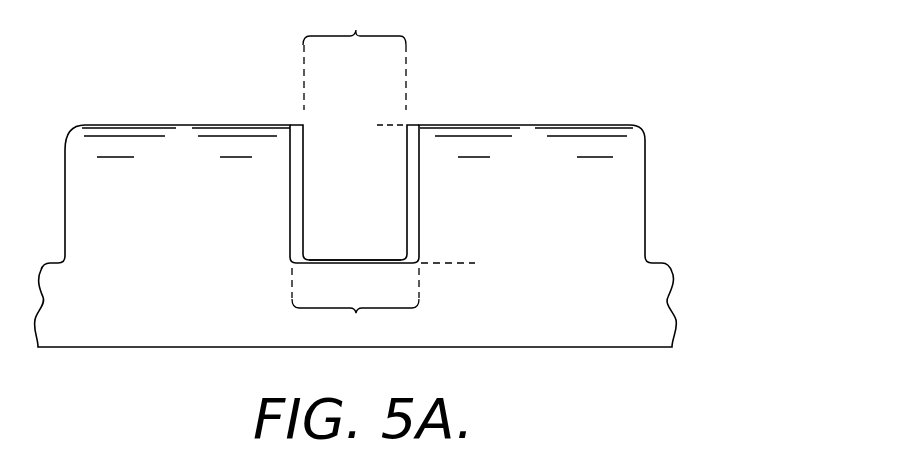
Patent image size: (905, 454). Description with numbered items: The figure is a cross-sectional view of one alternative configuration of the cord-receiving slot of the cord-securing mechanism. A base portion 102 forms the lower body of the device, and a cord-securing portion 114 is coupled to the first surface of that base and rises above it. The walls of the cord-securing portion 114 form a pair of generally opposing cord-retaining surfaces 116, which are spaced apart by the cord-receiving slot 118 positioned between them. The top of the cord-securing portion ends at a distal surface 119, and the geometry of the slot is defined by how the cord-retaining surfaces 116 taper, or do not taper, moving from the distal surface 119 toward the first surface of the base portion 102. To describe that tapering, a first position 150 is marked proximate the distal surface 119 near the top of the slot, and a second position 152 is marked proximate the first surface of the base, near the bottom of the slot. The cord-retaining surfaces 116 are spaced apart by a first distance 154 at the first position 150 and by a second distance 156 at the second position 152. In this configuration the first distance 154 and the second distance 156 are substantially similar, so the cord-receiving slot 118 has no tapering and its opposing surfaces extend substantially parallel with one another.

The base portion 102 is at (605, 330).
The cord-securing portion 114 is at (600, 143).
The cord-retaining surfaces 116 is at (408, 160).
The cord-receiving slot 118 is at (358, 260).
The distal surface 119 is at (184, 125).
The first position 150 is at (396, 124).
The second position 152 is at (448, 262).
The first distance 154 is at (356, 34).
The second distance 156 is at (356, 312).